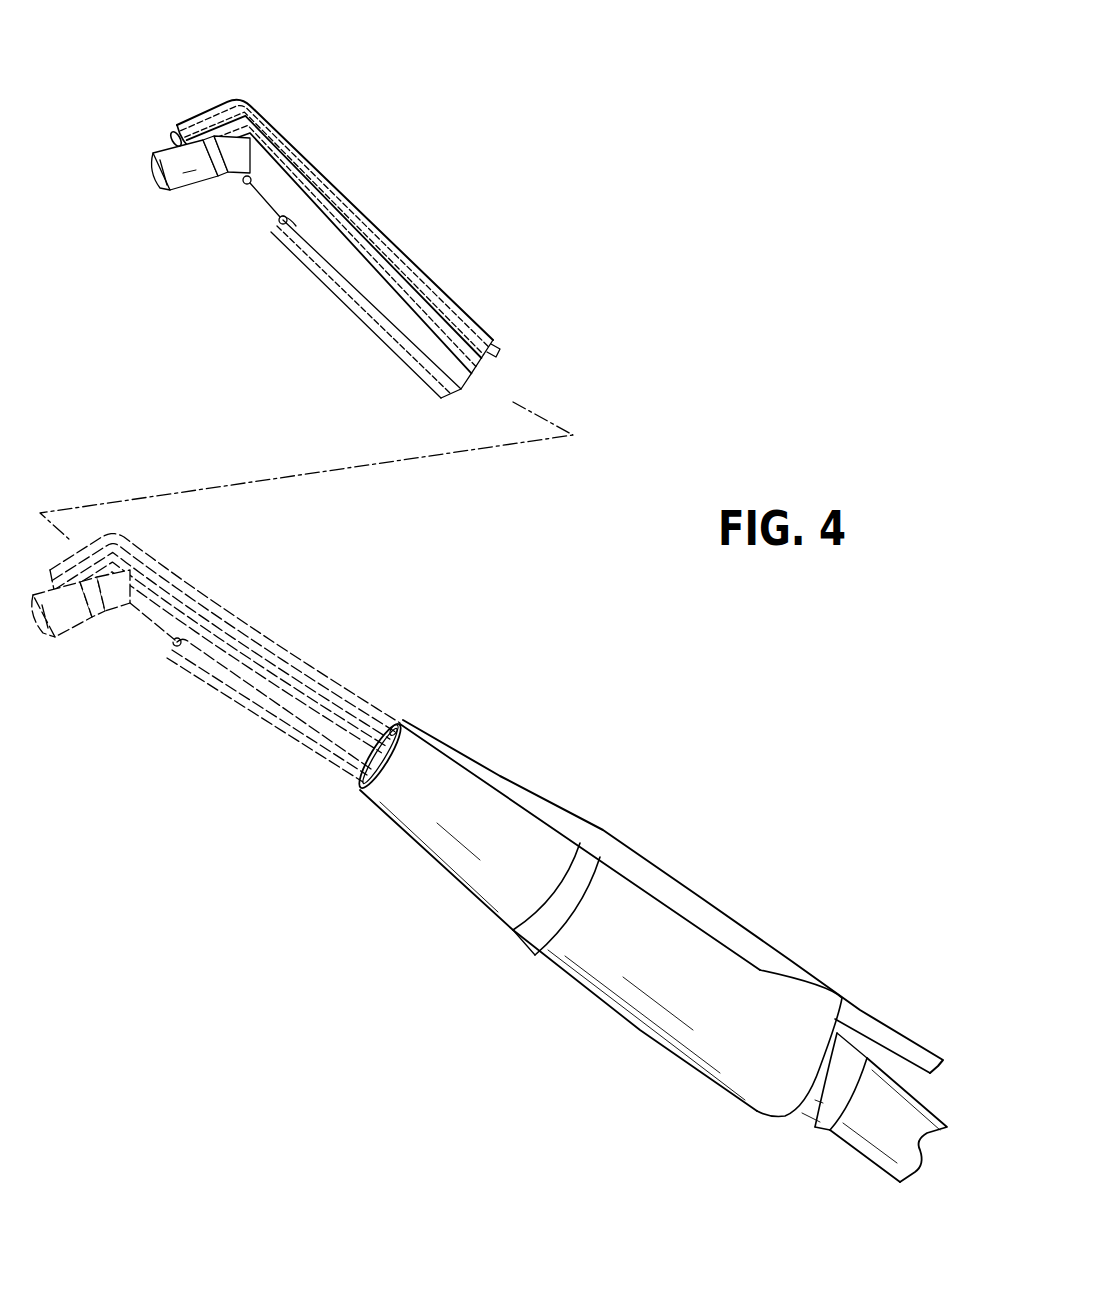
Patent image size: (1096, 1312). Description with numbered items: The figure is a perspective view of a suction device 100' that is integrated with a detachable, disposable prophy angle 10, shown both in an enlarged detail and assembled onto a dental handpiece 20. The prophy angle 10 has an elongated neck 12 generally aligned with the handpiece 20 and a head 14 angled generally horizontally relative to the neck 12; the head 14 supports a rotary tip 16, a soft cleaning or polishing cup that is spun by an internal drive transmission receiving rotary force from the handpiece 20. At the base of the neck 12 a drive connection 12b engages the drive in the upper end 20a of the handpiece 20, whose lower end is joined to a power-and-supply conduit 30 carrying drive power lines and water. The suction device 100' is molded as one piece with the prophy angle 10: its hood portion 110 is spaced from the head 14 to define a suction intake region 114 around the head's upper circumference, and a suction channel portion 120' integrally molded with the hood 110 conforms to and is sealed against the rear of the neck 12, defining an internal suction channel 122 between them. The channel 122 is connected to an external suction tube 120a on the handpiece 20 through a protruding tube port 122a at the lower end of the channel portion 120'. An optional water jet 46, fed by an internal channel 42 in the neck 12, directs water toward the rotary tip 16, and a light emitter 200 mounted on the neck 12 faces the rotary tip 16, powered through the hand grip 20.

The prophy angle 10 is at (262, 203).
The neck 12 is at (312, 223).
The drive connection 12b is at (457, 393).
The head 14 is at (225, 127).
The rotary tip 16 is at (157, 175).
The handpiece 20 is at (630, 920).
The upper end of handpiece 20a is at (388, 765).
The power-and-supply conduit 30 is at (867, 1113).
The internal channel 42 is at (344, 292).
The water jet 46 is at (281, 224).
The suction device 100' is at (460, 161).
The hood portion 110 is at (197, 127).
The suction intake region 114 is at (171, 141).
The suction channel portion 120' is at (338, 237).
The suction tube 120a is at (727, 922).
The internal suction channel 122 is at (413, 277).
The tube port 122a is at (500, 346).
The light emitter 200 is at (243, 184).